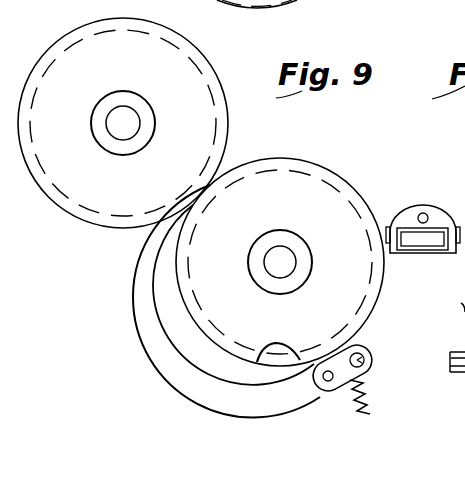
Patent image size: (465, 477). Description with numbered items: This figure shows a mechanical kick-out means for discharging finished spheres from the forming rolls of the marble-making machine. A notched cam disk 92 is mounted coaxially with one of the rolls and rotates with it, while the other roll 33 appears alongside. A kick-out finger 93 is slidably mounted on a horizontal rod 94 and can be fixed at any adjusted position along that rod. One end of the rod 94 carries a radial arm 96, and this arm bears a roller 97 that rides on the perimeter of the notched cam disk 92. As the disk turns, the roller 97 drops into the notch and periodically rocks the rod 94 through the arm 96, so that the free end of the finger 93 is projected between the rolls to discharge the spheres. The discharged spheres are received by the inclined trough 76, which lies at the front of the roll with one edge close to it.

The roll 33 is at (197, 63).
The notched cam disk 92 is at (280, 262).
The kick-out finger 93 is at (137, 297).
The horizontal rod 94 is at (448, 357).
The radial arm 96 is at (364, 350).
The roller 97 is at (326, 356).
The trough 76 is at (424, 251).